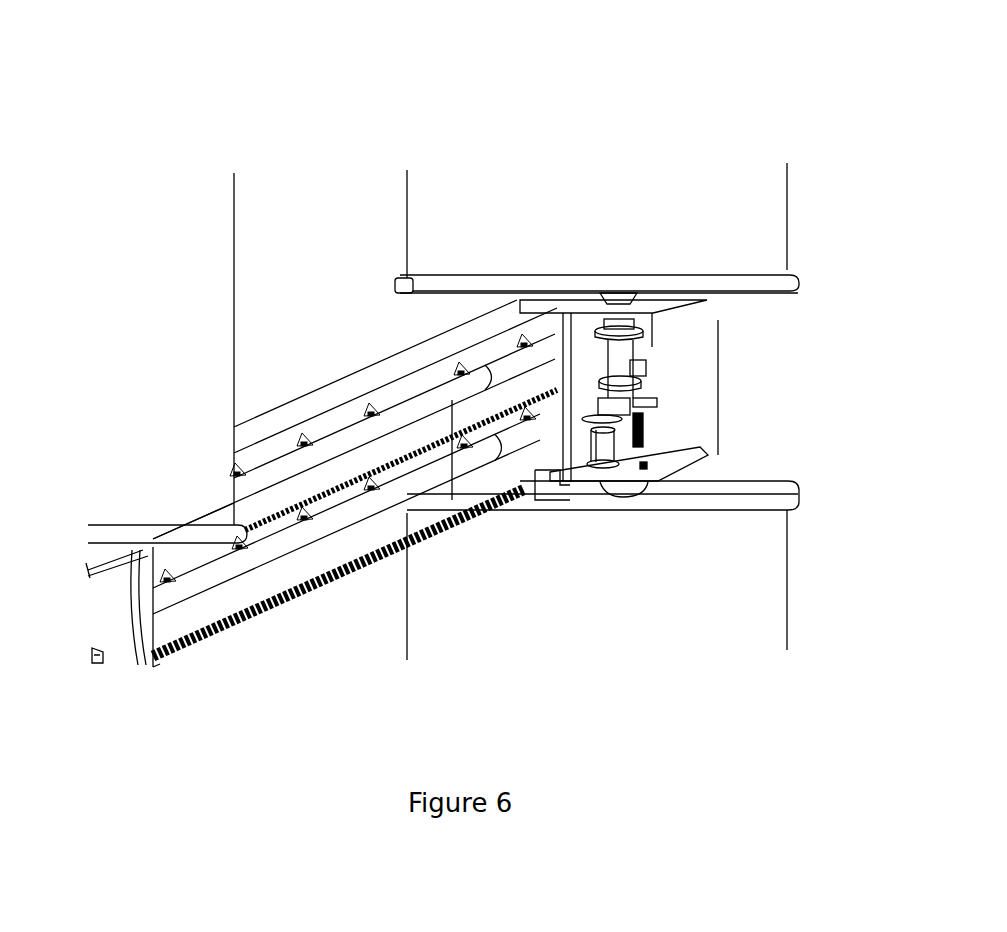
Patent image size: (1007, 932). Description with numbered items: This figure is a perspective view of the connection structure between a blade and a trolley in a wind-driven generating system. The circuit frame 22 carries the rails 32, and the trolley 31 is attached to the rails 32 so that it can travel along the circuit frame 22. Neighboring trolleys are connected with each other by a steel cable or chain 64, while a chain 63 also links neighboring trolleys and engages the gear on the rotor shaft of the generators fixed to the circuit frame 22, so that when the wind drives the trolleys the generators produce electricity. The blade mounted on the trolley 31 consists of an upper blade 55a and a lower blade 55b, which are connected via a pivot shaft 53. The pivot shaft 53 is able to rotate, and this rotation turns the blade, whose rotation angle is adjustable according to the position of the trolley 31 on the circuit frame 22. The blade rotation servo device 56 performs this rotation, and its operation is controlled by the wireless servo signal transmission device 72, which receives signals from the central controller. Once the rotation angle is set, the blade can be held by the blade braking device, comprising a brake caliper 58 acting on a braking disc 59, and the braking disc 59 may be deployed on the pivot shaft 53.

The circuit frame 22 is at (328, 390).
The rails 32 is at (457, 390).
The trolley 31 is at (700, 303).
The pivot shaft 53 is at (660, 403).
The upper blade 55a is at (750, 210).
The lower blade 55b is at (727, 594).
The blade rotation servo device 56 is at (599, 468).
The brake caliper 58 is at (650, 350).
The braking disc 59 is at (650, 335).
The chain 63 is at (328, 587).
The steel cable or chain 64 is at (280, 522).
The wireless servo signal transmission device 72 is at (700, 462).